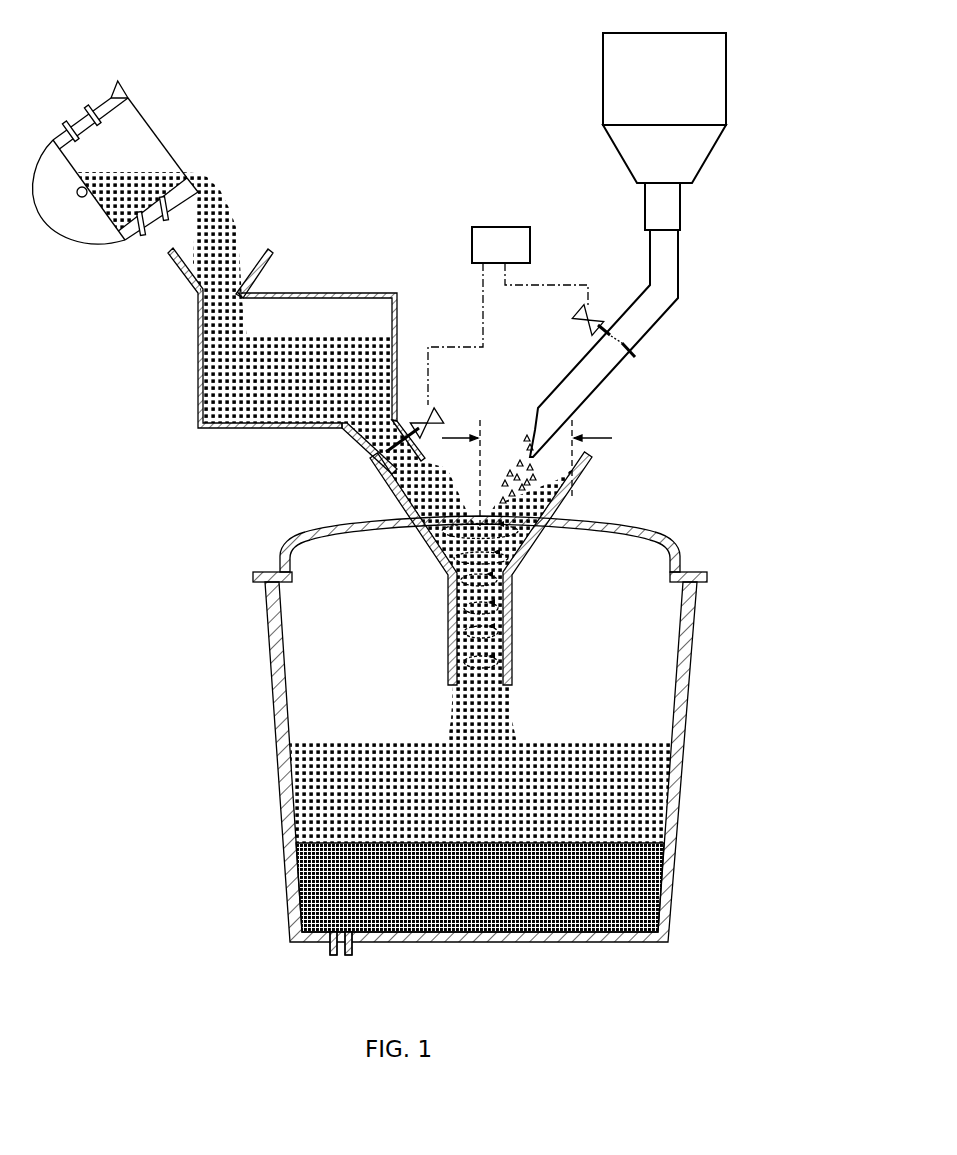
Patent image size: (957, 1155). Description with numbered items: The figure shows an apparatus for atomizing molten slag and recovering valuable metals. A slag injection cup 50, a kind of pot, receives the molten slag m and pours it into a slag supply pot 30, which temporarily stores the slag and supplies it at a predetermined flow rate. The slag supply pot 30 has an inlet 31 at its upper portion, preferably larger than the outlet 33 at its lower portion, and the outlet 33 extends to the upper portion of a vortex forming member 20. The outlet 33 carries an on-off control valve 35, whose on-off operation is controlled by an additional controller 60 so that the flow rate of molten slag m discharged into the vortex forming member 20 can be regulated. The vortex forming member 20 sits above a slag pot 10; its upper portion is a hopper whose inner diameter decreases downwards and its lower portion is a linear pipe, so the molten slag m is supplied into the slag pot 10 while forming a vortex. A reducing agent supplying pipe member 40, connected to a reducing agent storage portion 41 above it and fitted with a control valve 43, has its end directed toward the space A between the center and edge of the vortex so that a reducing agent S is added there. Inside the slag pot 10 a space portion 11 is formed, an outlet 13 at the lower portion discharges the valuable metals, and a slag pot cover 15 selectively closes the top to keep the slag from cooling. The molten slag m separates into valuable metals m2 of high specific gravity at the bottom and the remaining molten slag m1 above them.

The slag pot 10 is at (688, 663).
The space portion 11 is at (657, 650).
The outlet 13 is at (357, 947).
The slag pot cover 15 is at (642, 533).
The vortex forming member 20 is at (593, 460).
The slag supply pot 30 is at (357, 293).
The inlet 31 is at (267, 250).
The outlet 33 is at (413, 462).
The on-off control valve 35 is at (437, 407).
The reducing agent supplying pipe member 40 is at (653, 325).
The reducing agent storage portion 41 is at (726, 87).
The control valve 43 is at (573, 317).
The slag injection cup 50 is at (95, 108).
The controller 60 is at (505, 227).
The molten slag m is at (213, 380).
The remaining molten slag m1 is at (653, 790).
The valuable metals m2 is at (653, 882).
The reducing agent S is at (507, 467).
The space A is at (536, 474).